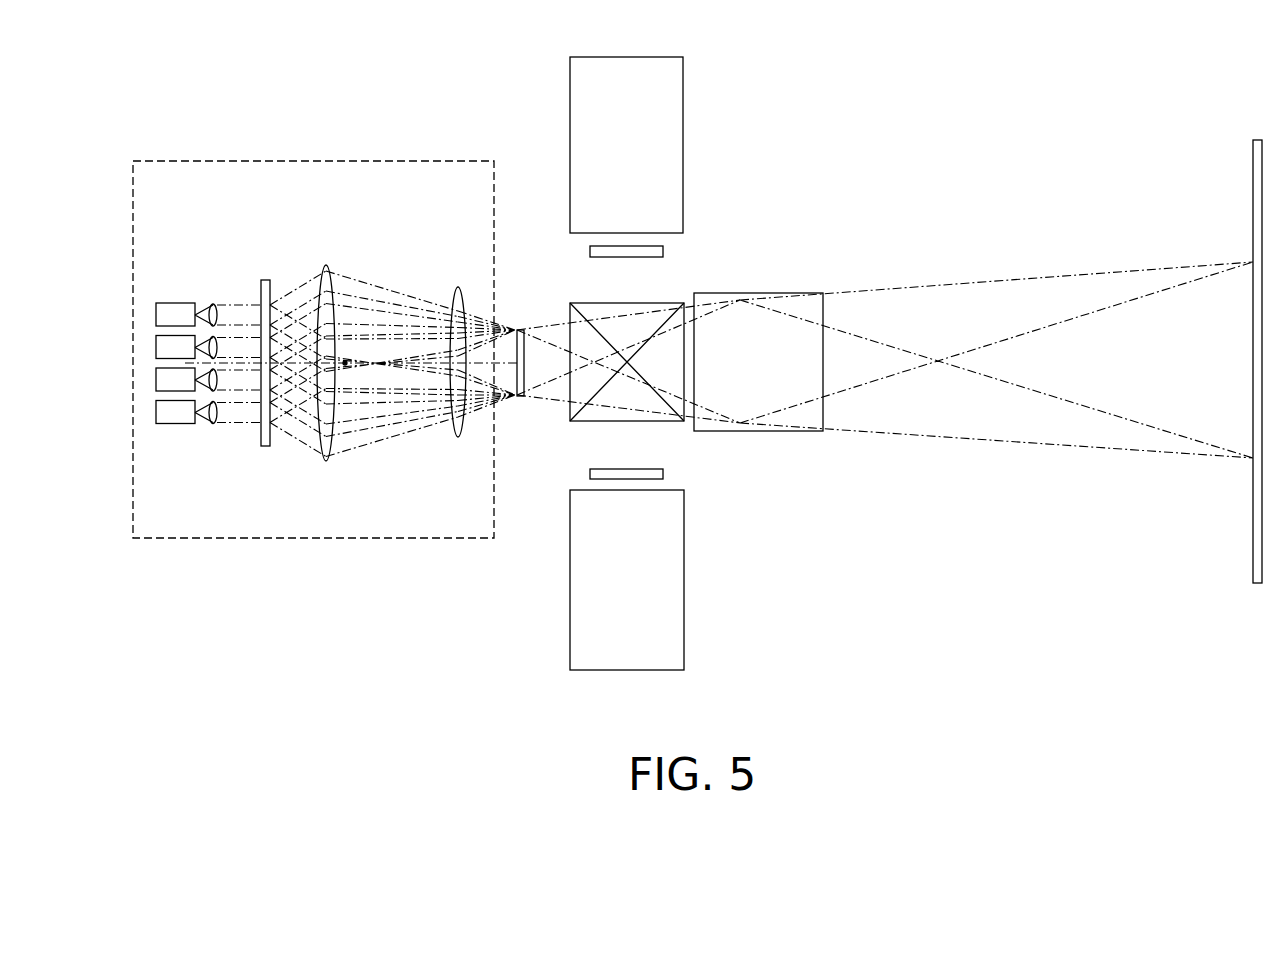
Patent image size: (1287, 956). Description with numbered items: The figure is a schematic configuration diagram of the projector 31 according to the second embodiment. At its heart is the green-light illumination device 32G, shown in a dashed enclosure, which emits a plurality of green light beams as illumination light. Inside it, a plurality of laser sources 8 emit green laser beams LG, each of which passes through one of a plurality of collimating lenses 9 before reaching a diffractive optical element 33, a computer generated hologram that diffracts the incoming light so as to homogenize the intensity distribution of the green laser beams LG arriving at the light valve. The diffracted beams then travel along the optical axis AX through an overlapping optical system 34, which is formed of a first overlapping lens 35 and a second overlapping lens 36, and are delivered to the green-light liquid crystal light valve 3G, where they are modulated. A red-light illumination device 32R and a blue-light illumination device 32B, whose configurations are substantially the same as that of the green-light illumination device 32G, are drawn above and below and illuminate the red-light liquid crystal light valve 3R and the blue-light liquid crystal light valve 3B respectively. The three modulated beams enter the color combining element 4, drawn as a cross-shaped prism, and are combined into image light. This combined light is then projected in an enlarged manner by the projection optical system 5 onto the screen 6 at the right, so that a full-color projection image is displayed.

The projector 31 is at (474, 100).
The green-light illumination device 32G is at (272, 158).
The red-light illumination device 32R is at (683, 130).
The blue-light illumination device 32B is at (684, 572).
The laser source 8 is at (173, 313).
The collimating lens 9 is at (213, 303).
The diffractive optical element 33 is at (265, 280).
The overlapping optical system 34 is at (389, 313).
The first overlapping lens 35 is at (326, 266).
The second overlapping lens 36 is at (451, 323).
The green laser beam LG is at (400, 435).
The optical axis AX is at (480, 376).
The green-light liquid crystal light valve 3G is at (518, 330).
The red-light liquid crystal light valve 3R is at (663, 252).
The blue-light liquid crystal light valve 3B is at (663, 474).
The color combining element 4 is at (643, 422).
The projection optical system 5 is at (765, 293).
The screen 6 is at (1253, 185).